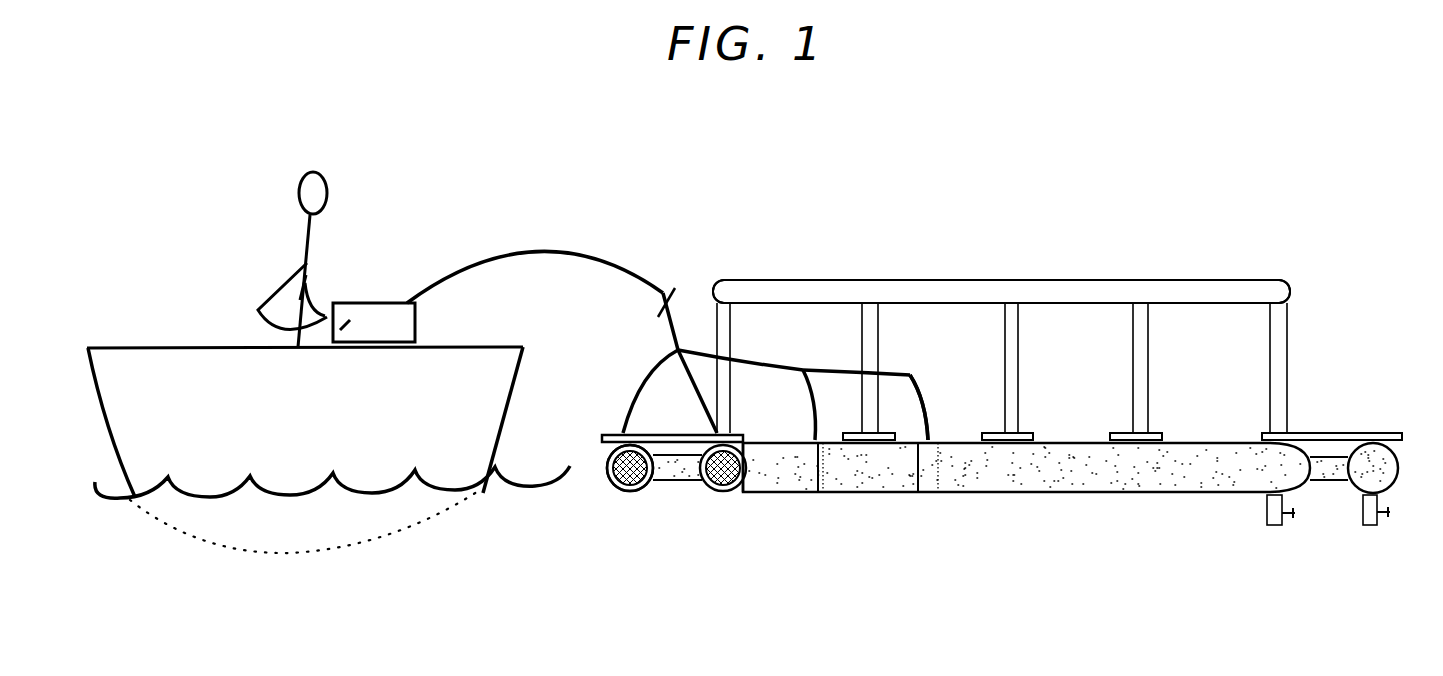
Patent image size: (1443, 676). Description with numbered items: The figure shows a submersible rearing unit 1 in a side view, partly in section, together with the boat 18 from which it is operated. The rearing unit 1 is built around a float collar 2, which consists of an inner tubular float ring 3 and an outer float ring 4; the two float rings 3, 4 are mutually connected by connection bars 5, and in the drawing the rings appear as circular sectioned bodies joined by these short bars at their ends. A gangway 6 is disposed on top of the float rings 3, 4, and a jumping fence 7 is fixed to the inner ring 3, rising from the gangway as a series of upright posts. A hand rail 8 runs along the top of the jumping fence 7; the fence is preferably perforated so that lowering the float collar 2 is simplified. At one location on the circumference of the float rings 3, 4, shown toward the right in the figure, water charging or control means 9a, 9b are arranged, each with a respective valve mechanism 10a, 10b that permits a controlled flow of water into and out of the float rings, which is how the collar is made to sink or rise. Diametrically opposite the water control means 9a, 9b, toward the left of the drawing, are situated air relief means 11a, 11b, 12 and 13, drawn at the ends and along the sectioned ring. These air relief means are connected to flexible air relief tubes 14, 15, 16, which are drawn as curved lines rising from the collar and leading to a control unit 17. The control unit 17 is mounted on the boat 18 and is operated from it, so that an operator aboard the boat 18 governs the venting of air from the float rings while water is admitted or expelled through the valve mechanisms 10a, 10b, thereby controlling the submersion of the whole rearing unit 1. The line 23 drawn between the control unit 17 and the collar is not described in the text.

The rearing unit 1 is at (1100, 237).
The float collar 2 is at (583, 443).
The inner tubular float ring 3 is at (727, 497).
The outer float ring 4 is at (627, 497).
The connection bars 5 is at (690, 487).
The gangway 6 is at (1337, 432).
The jumping fence 7 is at (1290, 320).
The hand rail 8 is at (1248, 280).
The water charging or control means 9a is at (1265, 500).
The water charging or control means 9b is at (1362, 500).
The valve mechanism 10a is at (1293, 522).
The valve mechanism 10b is at (1395, 520).
The air relief means 11a is at (747, 497).
The air relief means 11b is at (590, 493).
The air relief means 12 is at (813, 497).
The air relief means 13 is at (930, 497).
The flexible air relief tube 14 is at (640, 400).
The flexible air relief tube 15 is at (822, 390).
The flexible air relief tube 16 is at (923, 393).
The control unit 17 is at (378, 303).
The boat 18 is at (170, 347).
The towing cable 23 is at (553, 247).